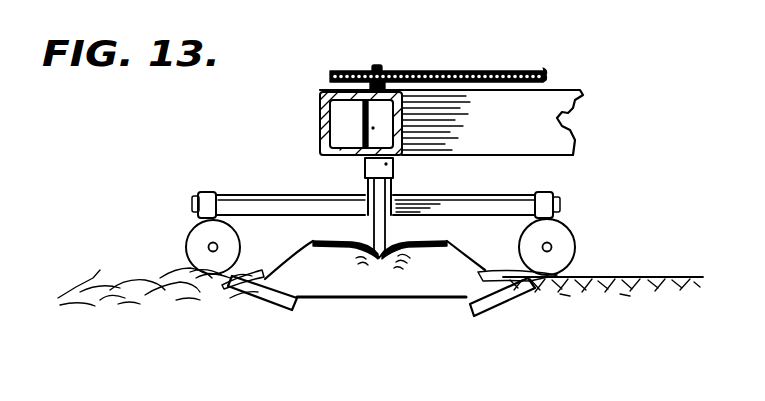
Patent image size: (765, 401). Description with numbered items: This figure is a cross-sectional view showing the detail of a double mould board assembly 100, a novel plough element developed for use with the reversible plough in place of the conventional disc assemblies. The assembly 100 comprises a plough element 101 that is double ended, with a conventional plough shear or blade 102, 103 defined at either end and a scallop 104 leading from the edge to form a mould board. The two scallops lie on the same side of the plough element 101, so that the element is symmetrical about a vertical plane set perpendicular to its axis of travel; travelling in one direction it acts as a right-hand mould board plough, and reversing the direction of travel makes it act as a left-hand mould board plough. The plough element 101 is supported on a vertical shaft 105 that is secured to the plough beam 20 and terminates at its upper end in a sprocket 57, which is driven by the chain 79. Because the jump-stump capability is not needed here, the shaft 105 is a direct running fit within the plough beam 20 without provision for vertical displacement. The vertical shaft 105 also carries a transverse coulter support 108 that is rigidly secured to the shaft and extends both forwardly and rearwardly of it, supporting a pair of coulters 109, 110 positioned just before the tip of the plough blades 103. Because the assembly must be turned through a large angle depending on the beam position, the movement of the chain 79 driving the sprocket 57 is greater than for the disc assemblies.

The plough beam 20 is at (542, 145).
The sprocket 57 is at (343, 70).
The chain 79 is at (510, 70).
The double mould board assembly 100 is at (560, 178).
The plough element 101 is at (347, 287).
The plough shear or blade 102 is at (272, 290).
The plough shear or blade 103 is at (498, 294).
The scallop 104 is at (400, 277).
The vertical shaft 105 is at (363, 172).
The transverse coulter support 108 is at (275, 207).
The coulter 109 is at (558, 240).
The coulter 110 is at (197, 237).